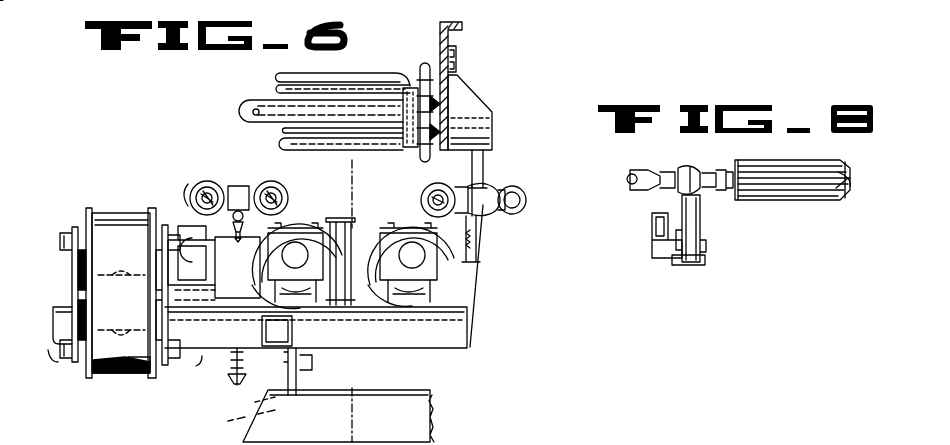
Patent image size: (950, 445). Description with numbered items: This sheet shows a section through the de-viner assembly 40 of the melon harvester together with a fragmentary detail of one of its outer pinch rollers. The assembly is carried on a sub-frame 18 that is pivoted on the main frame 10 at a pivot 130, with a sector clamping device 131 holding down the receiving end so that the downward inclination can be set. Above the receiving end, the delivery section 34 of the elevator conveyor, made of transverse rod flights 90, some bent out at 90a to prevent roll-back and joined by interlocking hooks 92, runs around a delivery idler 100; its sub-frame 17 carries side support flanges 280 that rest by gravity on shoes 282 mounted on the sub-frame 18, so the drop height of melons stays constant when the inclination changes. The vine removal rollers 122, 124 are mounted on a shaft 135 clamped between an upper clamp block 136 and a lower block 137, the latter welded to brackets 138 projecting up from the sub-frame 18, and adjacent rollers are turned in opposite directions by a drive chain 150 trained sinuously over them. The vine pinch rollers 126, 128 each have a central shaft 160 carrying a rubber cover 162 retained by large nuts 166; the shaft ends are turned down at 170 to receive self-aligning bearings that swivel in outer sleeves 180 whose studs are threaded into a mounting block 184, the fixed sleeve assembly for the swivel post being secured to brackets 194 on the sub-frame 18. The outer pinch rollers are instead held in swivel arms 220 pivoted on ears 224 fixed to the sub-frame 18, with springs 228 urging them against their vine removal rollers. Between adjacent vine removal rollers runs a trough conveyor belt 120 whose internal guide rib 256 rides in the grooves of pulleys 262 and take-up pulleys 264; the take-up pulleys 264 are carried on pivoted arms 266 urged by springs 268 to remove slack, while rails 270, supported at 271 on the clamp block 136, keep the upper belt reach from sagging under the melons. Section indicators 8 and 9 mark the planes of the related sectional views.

In FIG. 6, the section line 9- 9 is at (350, 177).
In FIG. 6, the section line 8— 8 is at (403, 125).
In FIG. 6, the frame 10 is at (441, 419).
In FIG. 6, the sub-frame 17 is at (468, 27).
In FIG. 6, the sub-frame 18 is at (446, 349).
In FIG. 6, the delivery section 34 is at (318, 72).
In FIG. 6, the de-viner assembly 40 is at (162, 121).
In FIG. 6, the transverse rod flights 90 is at (278, 84).
In FIG. 6, the bent-out flights 90a is at (296, 74).
In FIG. 6, the interlocking hooks 92 is at (418, 72).
In FIG. 6, the delivery idler 100 is at (452, 92).
In FIG. 6, the trough conveyor belt 120 is at (98, 214).
In FIG. 6, the vine removal roller 122 is at (174, 214).
In FIG. 6, the vine removal roller 124 is at (268, 306).
In FIG. 6, the vine pinch roller 126 is at (204, 180).
In FIG. 8, the vine pinch roller 126 is at (801, 204).
In FIG. 6, the vine pinch roller 128 is at (272, 182).
In FIG. 6, the pivot 130 is at (302, 366).
In FIG. 6, the sector clamping device 131 is at (238, 419).
In FIG. 6, the shaft 135 is at (432, 268).
In FIG. 6, the clamp block 136 is at (440, 256).
In FIG. 6, the lower block 137 is at (420, 280).
In FIG. 6, the brackets 138 is at (472, 322).
In FIG. 6, the drive chain 150 is at (301, 330).
In FIG. 6, the central shaft 160 is at (190, 190).
In FIG. 8, the central shaft 160 is at (852, 178).
In FIG. 8, the rubber cover 162 is at (850, 193).
In FIG. 8, the large nuts 166 is at (730, 160).
In FIG. 6, the turned-down shaft end 170 is at (483, 181).
In FIG. 8, the turned-down shaft end 170 is at (714, 166).
In FIG. 6, the outer sleeve 180 is at (288, 198).
In FIG. 6, the mounting block 184 is at (238, 185).
In FIG. 6, the brackets 194 is at (254, 288).
In FIG. 6, the swivel arm 220 is at (482, 222).
In FIG. 8, the swivel arm 220 is at (702, 226).
In FIG. 6, the ears 224 is at (527, 196).
In FIG. 8, the ears 224 is at (666, 264).
In FIG. 6, the springs 228 is at (478, 236).
In FIG. 6, the internal guide rib 256 is at (124, 376).
In FIG. 6, the pulleys 262 is at (115, 214).
In FIG. 6, the take-up pulleys 264 is at (100, 380).
In FIG. 6, the pivoted arms 266 is at (121, 293).
In FIG. 6, the springs 268 is at (55, 352).
In FIG. 6, the rails 270 is at (214, 262).
In FIG. 6, the rail support 271 is at (396, 302).
In FIG. 6, the side support flanges 280 is at (478, 108).
In FIG. 6, the shoes 282 is at (482, 168).